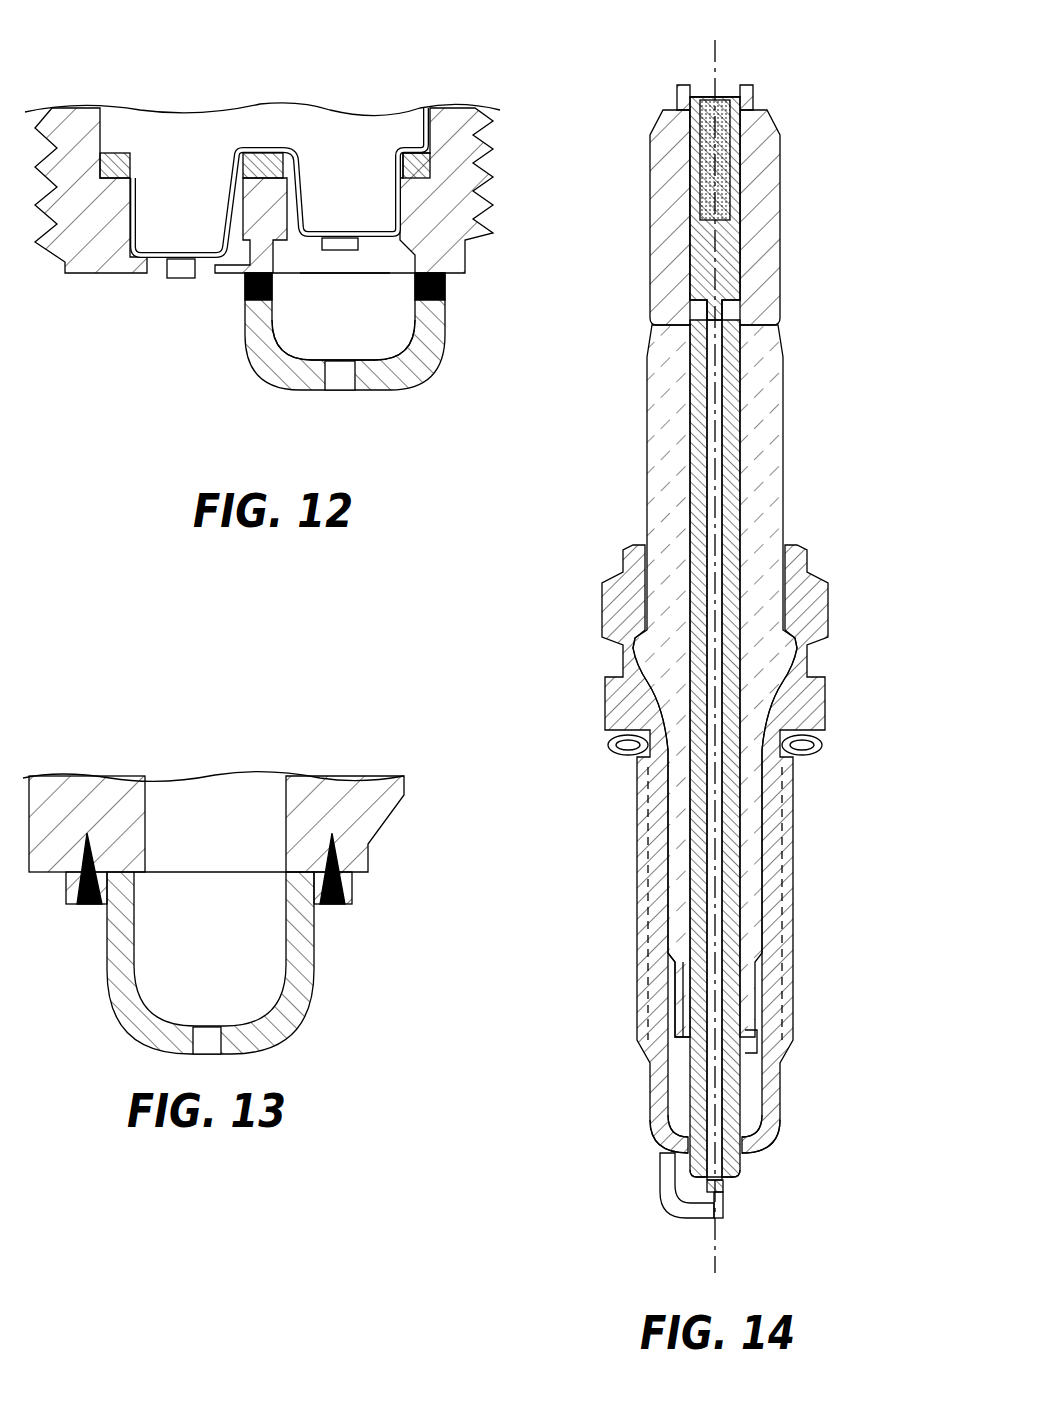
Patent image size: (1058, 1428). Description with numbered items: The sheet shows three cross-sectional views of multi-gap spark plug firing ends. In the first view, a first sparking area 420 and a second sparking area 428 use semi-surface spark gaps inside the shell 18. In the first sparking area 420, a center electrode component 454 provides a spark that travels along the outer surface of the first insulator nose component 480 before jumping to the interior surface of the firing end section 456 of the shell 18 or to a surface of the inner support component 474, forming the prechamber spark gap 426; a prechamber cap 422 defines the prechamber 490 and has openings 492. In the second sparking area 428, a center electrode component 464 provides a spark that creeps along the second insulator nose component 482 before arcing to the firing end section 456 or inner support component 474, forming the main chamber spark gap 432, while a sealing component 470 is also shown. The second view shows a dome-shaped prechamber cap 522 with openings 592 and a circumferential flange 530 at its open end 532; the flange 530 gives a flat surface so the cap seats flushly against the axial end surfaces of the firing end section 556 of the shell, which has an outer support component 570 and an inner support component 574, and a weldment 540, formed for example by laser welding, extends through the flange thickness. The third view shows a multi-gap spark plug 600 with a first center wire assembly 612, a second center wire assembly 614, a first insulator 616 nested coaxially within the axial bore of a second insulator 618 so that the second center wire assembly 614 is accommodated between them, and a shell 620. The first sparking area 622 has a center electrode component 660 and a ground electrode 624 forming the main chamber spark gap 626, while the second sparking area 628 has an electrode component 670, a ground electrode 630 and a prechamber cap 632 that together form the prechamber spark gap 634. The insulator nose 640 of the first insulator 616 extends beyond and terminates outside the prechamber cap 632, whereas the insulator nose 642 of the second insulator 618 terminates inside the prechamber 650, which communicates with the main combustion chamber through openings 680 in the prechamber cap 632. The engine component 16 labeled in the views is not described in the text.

In FIG. 12, the engine cylinder head 16 is at (380, 125).
In FIG. 12, the shell 18 is at (467, 169).
In FIG. 13, the shell 18 is at (362, 792).
In FIG. 12, the first sparking area 420 is at (353, 353).
In FIG. 12, the prechamber cap 422 is at (320, 357).
In FIG. 12, the prechamber spark gap 426 is at (395, 250).
In FIG. 12, the second sparking area 428 is at (137, 328).
In FIG. 12, the main chamber spark gap 432 is at (207, 280).
In FIG. 12, the center electrode component 454 is at (325, 240).
In FIG. 12, the firing end section 456 is at (442, 225).
In FIG. 12, the center electrode component 464 is at (192, 270).
In FIG. 12, the sealing component 470 is at (319, 167).
In FIG. 12, the inner support component 474 is at (270, 193).
In FIG. 12, the first insulator nose component 480 is at (365, 200).
In FIG. 12, the second insulator nose component 482 is at (173, 200).
In FIG. 12, the prechamber 490 is at (345, 330).
In FIG. 12, the openings 492 is at (268, 358).
In FIG. 13, the prechamber cap 522 is at (246, 973).
In FIG. 13, the circumferential flange 530 is at (357, 885).
In FIG. 13, the open end 532 is at (246, 887).
In FIG. 13, the weldment 540 is at (84, 901).
In FIG. 13, the firing end section 556 is at (406, 860).
In FIG. 13, the outer support component 570 is at (362, 844).
In FIG. 13, the inner support component 574 is at (70, 808).
In FIG. 13, the openings 592 is at (289, 1010).
In FIG. 14, the multi-gap spark plug 600 is at (729, 640).
In FIG. 14, the first center wire assembly 612 is at (717, 428).
In FIG. 14, the second center wire assembly 614 is at (778, 748).
In FIG. 14, the first insulator 616 is at (730, 873).
In FIG. 14, the second insulator 618 is at (726, 757).
In FIG. 14, the shell 620 is at (725, 849).
In FIG. 14, the first sparking area 622 is at (799, 1215).
In FIG. 14, the ground electrode 624 is at (675, 1202).
In FIG. 14, the main chamber spark gap 626 is at (720, 1197).
In FIG. 14, the second sparking area 628 is at (634, 1071).
In FIG. 14, the ground electrode 630 is at (809, 1042).
In FIG. 14, the prechamber cap 632 is at (767, 1123).
In FIG. 14, the prechamber spark gap 634 is at (742, 1063).
In FIG. 14, the insulator nose 640 is at (791, 775).
In FIG. 14, the insulator nose 642 is at (629, 1027).
In FIG. 14, the prechamber 650 is at (673, 1115).
In FIG. 14, the center electrode component 660 is at (723, 1182).
In FIG. 14, the electrode component 670 is at (692, 1033).
In FIG. 14, the openings 680 is at (770, 1137).